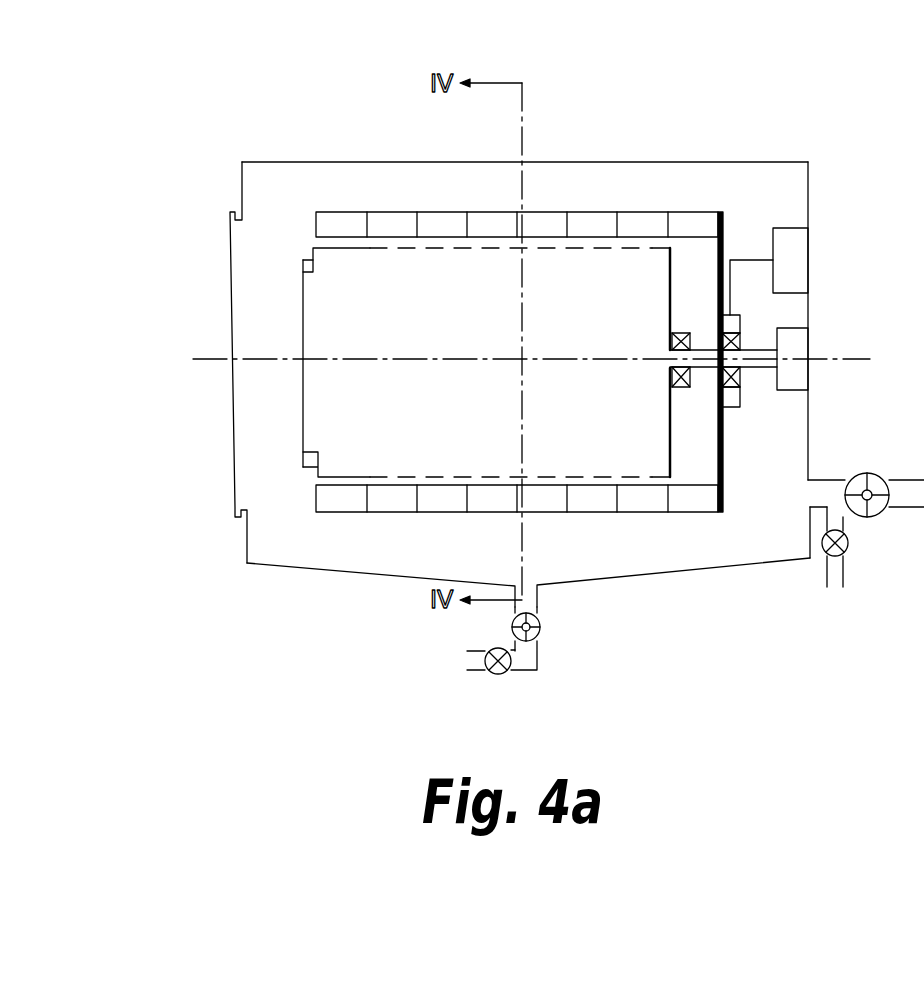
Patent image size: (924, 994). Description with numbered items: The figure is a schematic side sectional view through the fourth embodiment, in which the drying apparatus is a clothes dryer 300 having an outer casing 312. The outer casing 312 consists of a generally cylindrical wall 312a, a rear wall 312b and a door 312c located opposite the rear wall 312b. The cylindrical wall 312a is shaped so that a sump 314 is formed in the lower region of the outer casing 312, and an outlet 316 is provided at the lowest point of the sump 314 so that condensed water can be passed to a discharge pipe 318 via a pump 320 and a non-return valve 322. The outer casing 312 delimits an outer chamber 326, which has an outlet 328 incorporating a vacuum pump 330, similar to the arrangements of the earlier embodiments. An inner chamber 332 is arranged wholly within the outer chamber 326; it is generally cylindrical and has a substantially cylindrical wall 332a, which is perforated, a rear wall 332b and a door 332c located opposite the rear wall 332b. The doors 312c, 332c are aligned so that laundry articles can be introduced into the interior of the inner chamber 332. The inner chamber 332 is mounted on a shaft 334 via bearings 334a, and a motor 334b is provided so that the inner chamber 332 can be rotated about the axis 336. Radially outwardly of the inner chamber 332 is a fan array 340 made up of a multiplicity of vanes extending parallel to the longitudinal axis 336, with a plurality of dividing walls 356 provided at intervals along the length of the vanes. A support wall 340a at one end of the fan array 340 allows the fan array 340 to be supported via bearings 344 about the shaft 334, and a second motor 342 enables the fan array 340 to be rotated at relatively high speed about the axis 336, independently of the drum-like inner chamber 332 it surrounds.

The clothes dryer 300 is at (328, 140).
The outer casing 312 is at (523, 338).
The cylindrical wall 312a is at (378, 162).
The rear wall 312b is at (808, 172).
The door 312c is at (230, 228).
The sump 314 is at (407, 550).
The outlet 316 is at (540, 602).
The discharge pipe 318 is at (530, 673).
The pump 320 is at (543, 630).
The non-return valve 322 is at (467, 667).
The outer chamber 326 is at (722, 172).
The outlet 328 is at (827, 492).
The vacuum pump 330 is at (877, 512).
The inner chamber 332 is at (325, 423).
The cylindrical wall 332a is at (453, 252).
The rear wall 332b is at (670, 408).
The door 332c is at (303, 302).
The shaft 334 is at (758, 350).
The bearings 334a is at (683, 334).
The motor 334b is at (795, 350).
The axis 336 is at (480, 358).
The fan array 340 is at (438, 218).
The support wall 340a is at (723, 247).
The second motor 342 is at (793, 253).
The bearings 344 is at (742, 380).
The dividing walls 356 is at (565, 227).